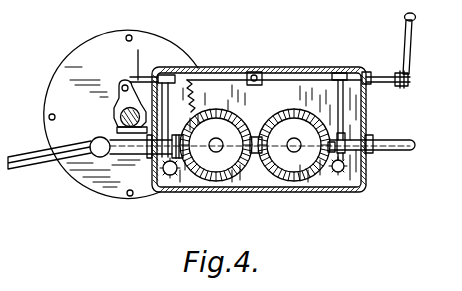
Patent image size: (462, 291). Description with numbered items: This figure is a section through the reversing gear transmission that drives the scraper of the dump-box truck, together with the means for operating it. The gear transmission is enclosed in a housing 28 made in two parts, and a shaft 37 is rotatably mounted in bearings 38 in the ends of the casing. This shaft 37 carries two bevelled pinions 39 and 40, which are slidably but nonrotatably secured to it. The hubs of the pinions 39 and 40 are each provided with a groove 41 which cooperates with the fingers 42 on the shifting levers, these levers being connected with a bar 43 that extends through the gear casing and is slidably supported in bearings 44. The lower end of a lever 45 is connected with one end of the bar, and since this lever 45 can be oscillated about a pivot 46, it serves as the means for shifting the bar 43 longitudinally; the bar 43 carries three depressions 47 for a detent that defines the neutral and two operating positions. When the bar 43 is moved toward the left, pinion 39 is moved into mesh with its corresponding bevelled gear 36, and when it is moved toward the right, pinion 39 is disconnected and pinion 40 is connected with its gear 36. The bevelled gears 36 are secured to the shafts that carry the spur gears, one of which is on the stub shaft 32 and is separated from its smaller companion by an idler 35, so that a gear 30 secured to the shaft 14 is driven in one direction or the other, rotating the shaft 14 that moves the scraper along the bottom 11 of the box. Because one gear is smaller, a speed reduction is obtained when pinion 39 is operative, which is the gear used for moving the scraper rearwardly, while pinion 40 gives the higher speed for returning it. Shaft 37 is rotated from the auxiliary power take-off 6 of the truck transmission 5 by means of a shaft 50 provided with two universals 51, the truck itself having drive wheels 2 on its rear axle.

The drive wheels 2 is at (138, 51).
The transmission 5 is at (190, 94).
The auxiliary power take-off 6 is at (239, 65).
The bottom 11 is at (419, 279).
The shaft 14 is at (118, 110).
The housing 28 is at (82, 64).
The gear 30 is at (179, 85).
The stub shaft 32 is at (212, 150).
The idler 35 is at (256, 137).
The bevelled gears 36 is at (258, 178).
The shaft 37 is at (123, 152).
The bearings 38 is at (158, 158).
The bevelled pinion 39 is at (341, 160).
The bevelled pinion 40 is at (177, 170).
The groove 41 is at (344, 170).
The fingers 42 is at (178, 90).
The bar 43 is at (380, 77).
The bearings 44 is at (362, 75).
The lever 45 is at (412, 55).
The pivot 46 is at (418, 17).
The depressions 47 is at (251, 73).
The shaft 50 is at (30, 166).
The universals 51 is at (96, 140).